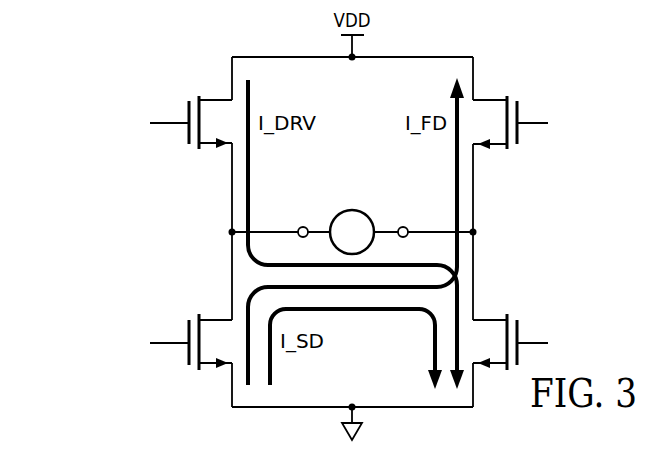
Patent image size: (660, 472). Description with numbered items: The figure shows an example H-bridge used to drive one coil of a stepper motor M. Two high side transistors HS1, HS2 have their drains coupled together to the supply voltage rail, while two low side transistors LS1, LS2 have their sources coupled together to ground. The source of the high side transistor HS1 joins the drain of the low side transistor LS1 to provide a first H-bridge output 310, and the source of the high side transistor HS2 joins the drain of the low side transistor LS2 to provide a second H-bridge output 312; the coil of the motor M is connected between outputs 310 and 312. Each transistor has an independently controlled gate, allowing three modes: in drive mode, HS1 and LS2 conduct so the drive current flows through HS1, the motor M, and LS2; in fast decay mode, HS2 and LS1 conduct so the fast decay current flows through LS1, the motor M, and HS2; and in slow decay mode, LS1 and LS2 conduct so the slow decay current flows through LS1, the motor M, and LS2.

The first H-bridge output 310 is at (300, 227).
The second H-bridge output 312 is at (405, 227).
The high side transistor HS1 is at (165, 109).
The high side transistor HS2 is at (540, 109).
The low side transistor LS1 is at (165, 329).
The low side transistor LS2 is at (539, 329).
The motor M is at (352, 232).